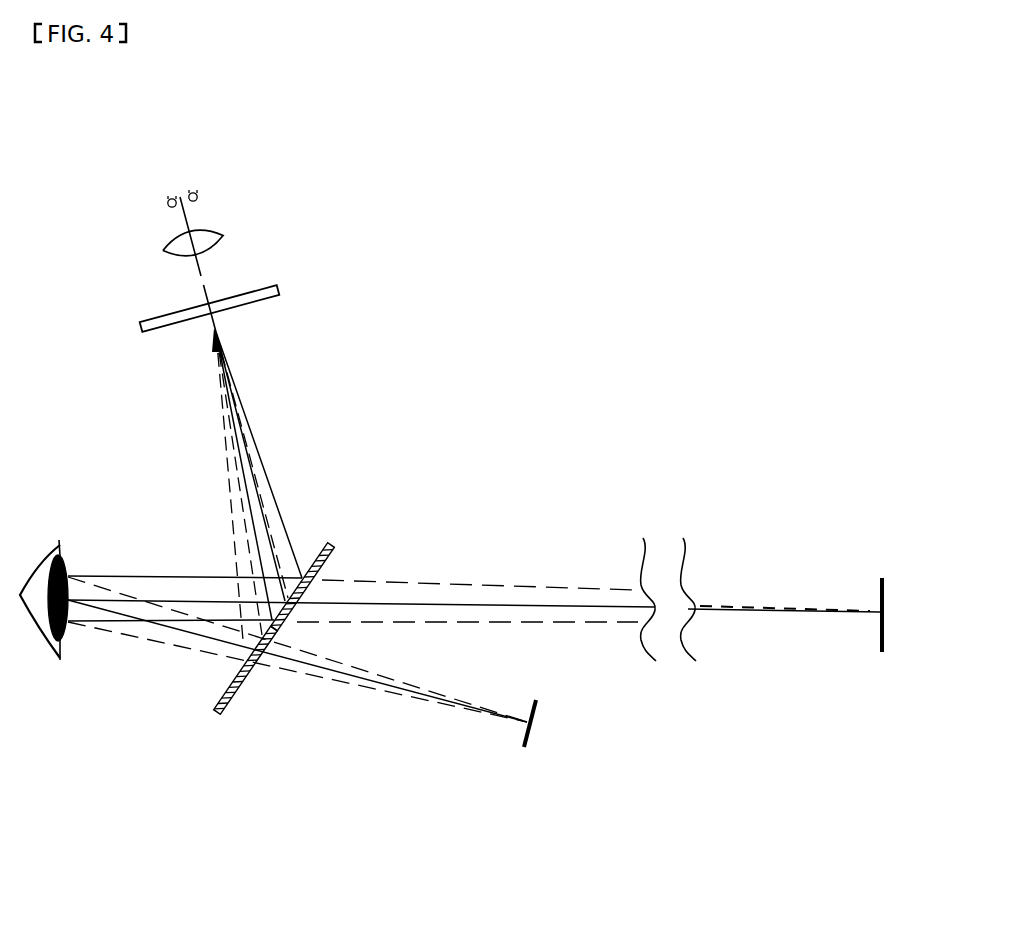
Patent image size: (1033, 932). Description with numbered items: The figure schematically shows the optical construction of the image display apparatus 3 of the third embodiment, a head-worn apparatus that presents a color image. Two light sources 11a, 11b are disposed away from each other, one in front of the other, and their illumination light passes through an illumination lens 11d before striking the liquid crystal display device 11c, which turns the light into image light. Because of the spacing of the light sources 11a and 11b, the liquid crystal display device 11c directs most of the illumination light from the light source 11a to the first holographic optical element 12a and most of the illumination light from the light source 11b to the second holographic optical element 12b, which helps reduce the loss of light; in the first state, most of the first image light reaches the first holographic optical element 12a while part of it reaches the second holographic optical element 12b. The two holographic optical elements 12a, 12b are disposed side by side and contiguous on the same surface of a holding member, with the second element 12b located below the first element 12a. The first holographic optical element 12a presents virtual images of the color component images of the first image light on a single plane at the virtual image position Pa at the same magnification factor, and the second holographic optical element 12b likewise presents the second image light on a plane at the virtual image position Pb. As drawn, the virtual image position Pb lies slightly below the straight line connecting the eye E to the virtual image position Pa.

The image display apparatus 3 is at (224, 766).
The light source 11a is at (166, 201).
The light source 11b is at (200, 194).
The liquid crystal display device 11c is at (280, 290).
The illumination lens 11d is at (224, 236).
The first holographic optical element 12a is at (334, 549).
The second holographic optical element 12b is at (224, 703).
The eye E is at (60, 658).
The virtual image position Pa is at (880, 653).
The virtual image position Pb is at (525, 748).